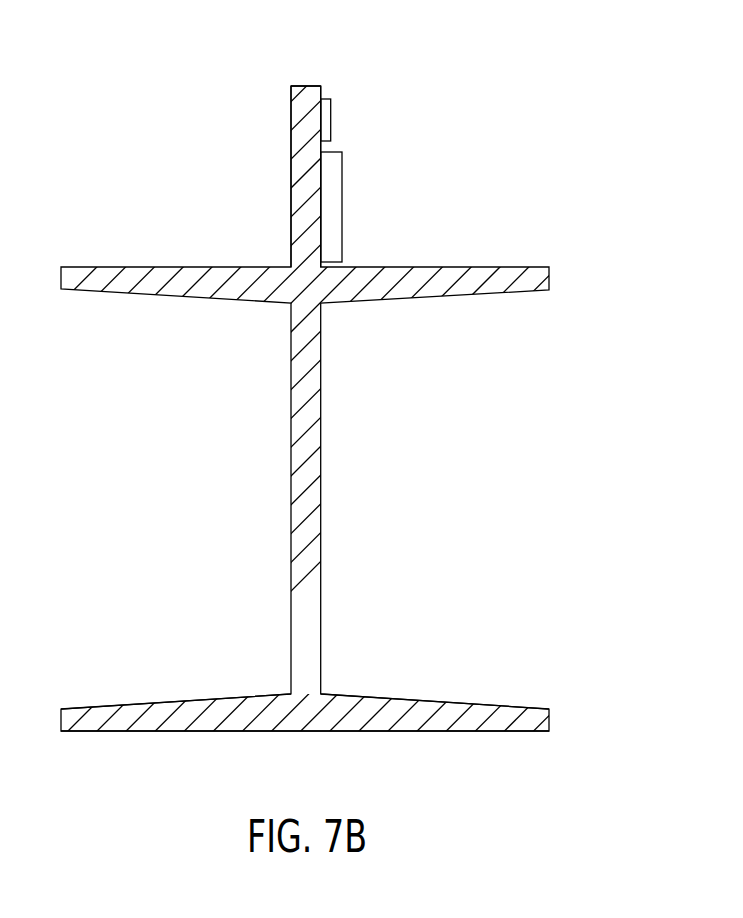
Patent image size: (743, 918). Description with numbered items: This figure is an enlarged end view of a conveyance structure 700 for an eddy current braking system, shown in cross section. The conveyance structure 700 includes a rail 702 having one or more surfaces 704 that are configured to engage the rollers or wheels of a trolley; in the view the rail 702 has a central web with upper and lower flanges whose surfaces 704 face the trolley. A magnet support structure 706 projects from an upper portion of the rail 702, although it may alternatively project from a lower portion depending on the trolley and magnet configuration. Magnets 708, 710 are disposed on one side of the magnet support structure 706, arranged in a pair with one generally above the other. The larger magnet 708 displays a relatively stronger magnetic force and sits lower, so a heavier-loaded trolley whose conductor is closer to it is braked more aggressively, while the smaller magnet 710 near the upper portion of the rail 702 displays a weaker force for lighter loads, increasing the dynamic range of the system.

The conveyance structure 700 is at (371, 390).
The rail 702 is at (336, 488).
The surfaces 704 is at (259, 681).
The magnet support structure 706 is at (298, 172).
The larger magnet 708 is at (349, 199).
The smaller magnet 710 is at (342, 112).